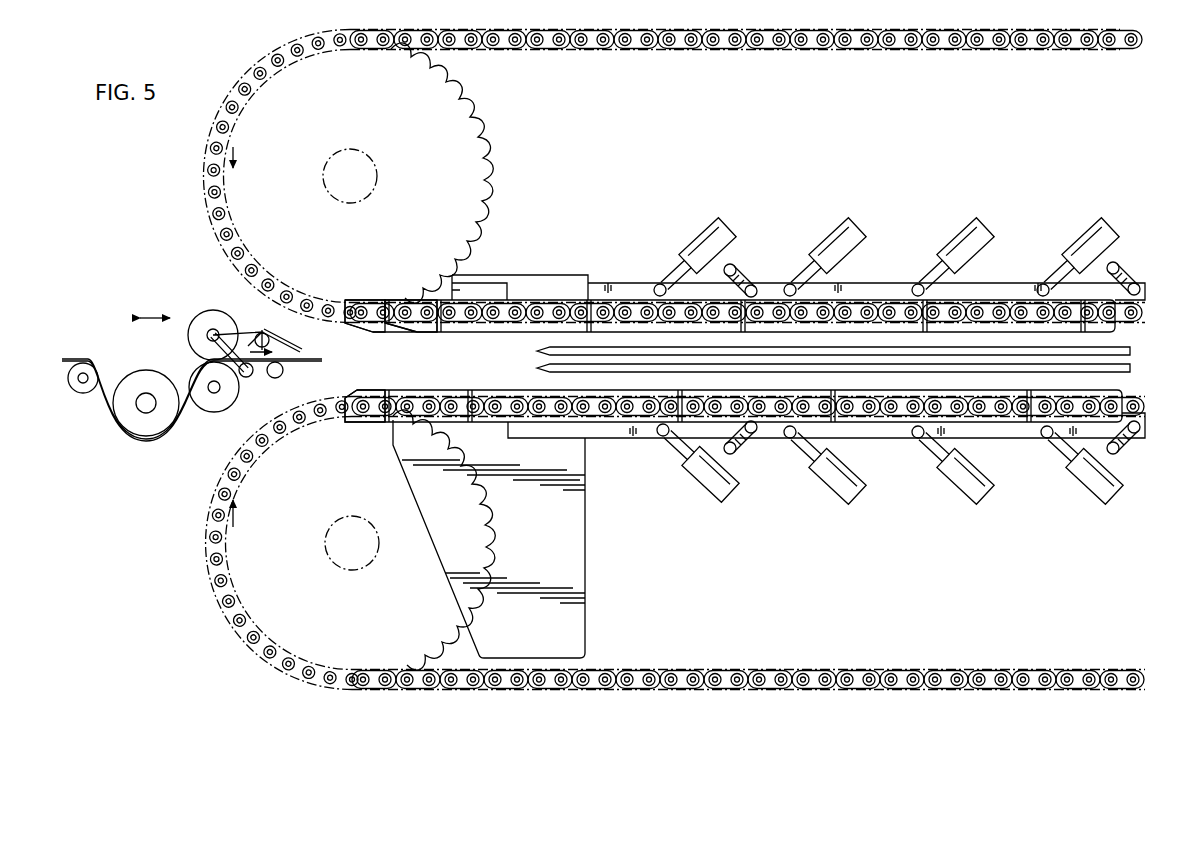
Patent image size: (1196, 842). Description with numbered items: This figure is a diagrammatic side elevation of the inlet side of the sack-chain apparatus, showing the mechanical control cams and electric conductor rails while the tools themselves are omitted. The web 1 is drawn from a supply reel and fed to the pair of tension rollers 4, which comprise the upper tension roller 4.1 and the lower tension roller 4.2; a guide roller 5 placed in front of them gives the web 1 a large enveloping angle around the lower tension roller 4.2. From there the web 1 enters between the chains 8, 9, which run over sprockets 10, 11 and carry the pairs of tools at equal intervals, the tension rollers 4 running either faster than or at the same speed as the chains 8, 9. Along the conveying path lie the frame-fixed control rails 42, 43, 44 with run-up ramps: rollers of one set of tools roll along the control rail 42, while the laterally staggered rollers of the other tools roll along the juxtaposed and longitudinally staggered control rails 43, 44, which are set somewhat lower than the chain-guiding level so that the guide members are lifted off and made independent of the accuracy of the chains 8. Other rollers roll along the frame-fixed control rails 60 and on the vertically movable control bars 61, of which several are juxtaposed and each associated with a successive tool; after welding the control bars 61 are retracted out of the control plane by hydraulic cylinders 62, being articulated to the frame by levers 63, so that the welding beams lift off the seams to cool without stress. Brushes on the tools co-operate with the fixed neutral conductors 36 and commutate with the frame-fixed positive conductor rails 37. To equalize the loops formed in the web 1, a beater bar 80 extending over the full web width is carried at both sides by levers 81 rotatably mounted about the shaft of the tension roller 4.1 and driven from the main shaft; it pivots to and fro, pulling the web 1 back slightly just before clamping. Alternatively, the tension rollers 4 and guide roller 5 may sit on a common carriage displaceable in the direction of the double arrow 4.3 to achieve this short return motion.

The web 1 is at (70, 361).
The pair of tension rollers 4 is at (167, 254).
The tension roller 4.1 is at (213, 318).
The lower tension roller 4.2 is at (215, 402).
The double arrow 4.3 is at (158, 300).
The guide roller 5 is at (145, 432).
The chain 8 is at (668, 55).
The chain 9 is at (668, 675).
The sprocket 10 is at (458, 122).
The sprocket 11 is at (433, 633).
The neutral conductor 36 is at (537, 351).
The positive conductor rail 37 is at (537, 368).
The control rail 42 is at (362, 422).
The control rail 43 is at (370, 334).
The control rail 44 is at (423, 334).
The control rail 60 is at (495, 281).
The movable control bar 61 is at (620, 285).
The hydraulic cylinder 62 is at (702, 247).
The lever 63 is at (740, 268).
The beater bar 80 is at (248, 376).
The lever 81 is at (222, 350).